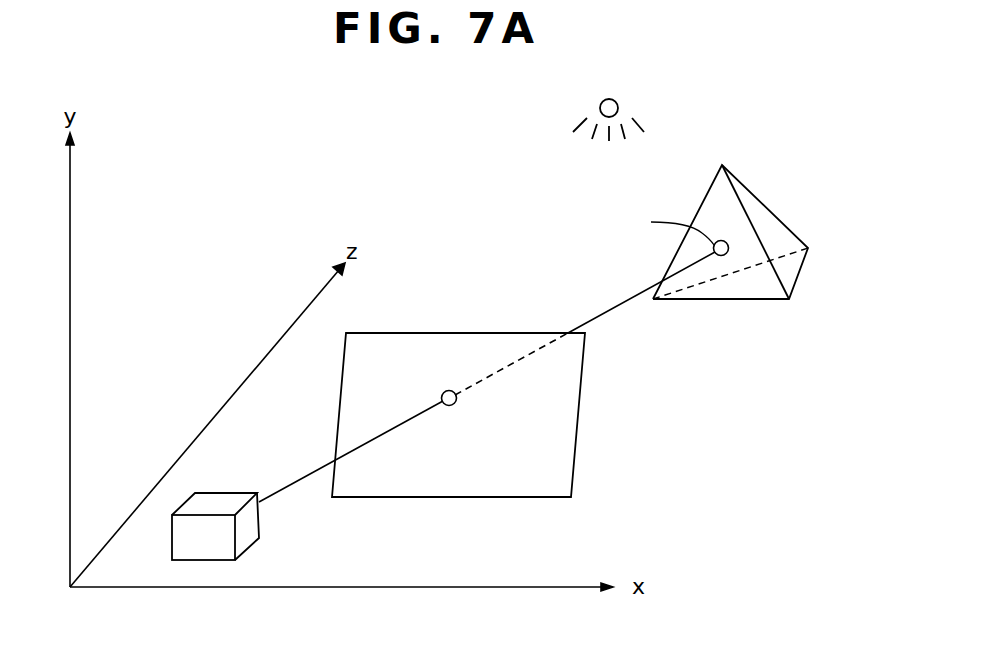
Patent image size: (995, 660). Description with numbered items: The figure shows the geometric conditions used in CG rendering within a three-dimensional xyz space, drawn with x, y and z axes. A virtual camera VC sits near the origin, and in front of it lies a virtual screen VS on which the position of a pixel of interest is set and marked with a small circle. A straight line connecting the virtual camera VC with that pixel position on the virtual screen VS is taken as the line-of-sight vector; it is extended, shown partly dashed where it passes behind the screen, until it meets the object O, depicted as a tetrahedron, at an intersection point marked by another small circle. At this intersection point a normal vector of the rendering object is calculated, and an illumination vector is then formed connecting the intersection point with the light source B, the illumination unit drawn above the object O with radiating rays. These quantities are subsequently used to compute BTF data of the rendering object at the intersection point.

The light source B is at (619, 105).
The virtual camera VC is at (250, 542).
The virtual screen VS is at (582, 422).
The object O is at (742, 300).